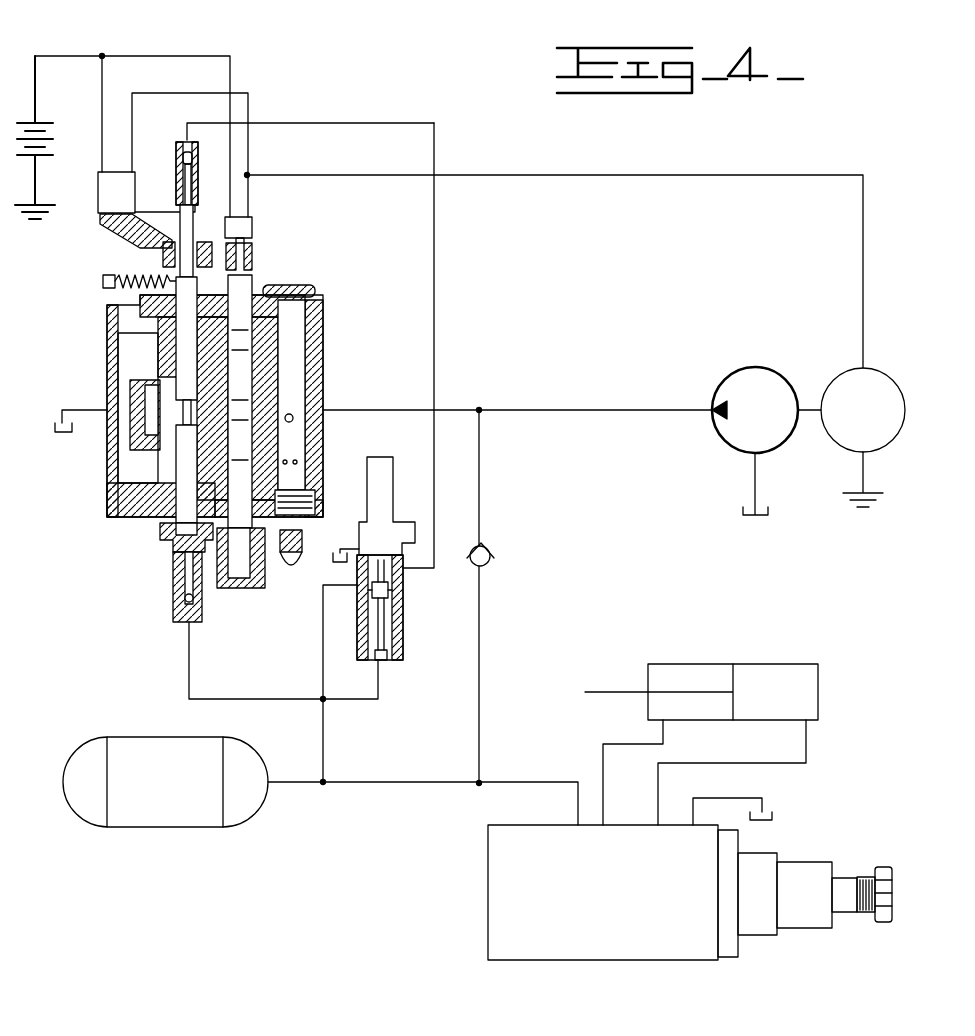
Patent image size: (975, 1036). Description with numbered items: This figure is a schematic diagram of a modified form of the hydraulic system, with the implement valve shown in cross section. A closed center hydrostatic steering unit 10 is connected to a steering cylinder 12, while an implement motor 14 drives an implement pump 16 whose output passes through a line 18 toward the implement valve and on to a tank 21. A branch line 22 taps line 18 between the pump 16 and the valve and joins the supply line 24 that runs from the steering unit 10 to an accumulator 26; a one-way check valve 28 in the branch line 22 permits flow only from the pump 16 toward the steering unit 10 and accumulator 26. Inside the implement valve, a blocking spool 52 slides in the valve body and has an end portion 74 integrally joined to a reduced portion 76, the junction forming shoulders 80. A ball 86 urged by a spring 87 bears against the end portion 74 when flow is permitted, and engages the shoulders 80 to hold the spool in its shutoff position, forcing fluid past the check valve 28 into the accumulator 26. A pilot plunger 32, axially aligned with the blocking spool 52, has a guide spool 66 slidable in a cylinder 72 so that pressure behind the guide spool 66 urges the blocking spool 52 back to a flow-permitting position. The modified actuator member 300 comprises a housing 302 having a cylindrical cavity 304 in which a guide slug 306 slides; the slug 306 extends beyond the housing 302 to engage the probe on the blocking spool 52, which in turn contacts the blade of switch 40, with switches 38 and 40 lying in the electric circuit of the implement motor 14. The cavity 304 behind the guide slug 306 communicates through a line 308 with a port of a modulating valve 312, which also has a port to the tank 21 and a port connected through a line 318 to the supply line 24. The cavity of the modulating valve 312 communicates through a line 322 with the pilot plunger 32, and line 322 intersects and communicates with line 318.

The closed center hydrostatic steering unit 10 is at (586, 964).
The steering cylinder 12 is at (708, 632).
The implement motor 14 is at (851, 378).
The implement pump 16 is at (752, 377).
The line 18 is at (560, 404).
The tank 21 is at (63, 438).
The branch line 22 is at (482, 463).
The supply line 24 is at (396, 783).
The accumulator 26 is at (170, 815).
The one-way check valve 28 is at (487, 547).
The pilot plunger 32 is at (160, 548).
The switch 38 is at (252, 226).
The switch 40 is at (98, 190).
The blocking spool 52 is at (180, 400).
The guide spool 66 is at (182, 565).
The cylinder 72 is at (184, 600).
The end portion 74 is at (215, 406).
The reduced portion 76 is at (165, 247).
The shoulders 80 is at (163, 259).
The ball 86 is at (185, 302).
The spring 87 is at (167, 290).
The actuator member 300 is at (178, 138).
The housing 302 is at (198, 160).
The cylindrical cavity 304 is at (186, 160).
The guide slug 306 is at (191, 186).
The line 308 is at (434, 305).
The modulating valve 312 is at (406, 606).
The line 318 is at (322, 628).
The line 322 is at (349, 700).